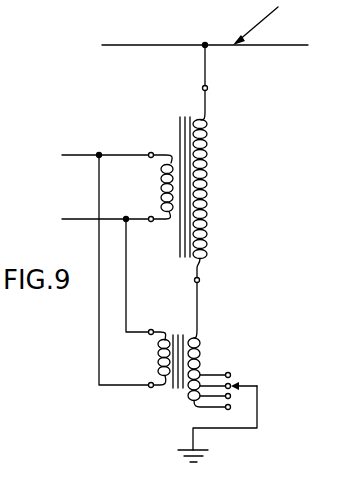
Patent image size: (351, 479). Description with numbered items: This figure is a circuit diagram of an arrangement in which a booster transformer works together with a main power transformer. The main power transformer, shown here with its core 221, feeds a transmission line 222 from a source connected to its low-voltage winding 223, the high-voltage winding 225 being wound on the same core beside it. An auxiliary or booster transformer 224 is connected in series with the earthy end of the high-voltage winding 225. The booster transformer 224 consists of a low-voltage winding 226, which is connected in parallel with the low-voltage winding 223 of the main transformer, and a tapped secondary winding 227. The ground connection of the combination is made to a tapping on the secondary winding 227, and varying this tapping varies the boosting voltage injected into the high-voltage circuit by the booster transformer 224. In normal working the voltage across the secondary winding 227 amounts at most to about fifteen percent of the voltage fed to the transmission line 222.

The transmission line 222 is at (263, 46).
The transformer core 221 is at (212, 179).
The high-voltage winding 225 is at (206, 233).
The low-voltage winding 223 is at (161, 188).
The auxiliary or booster transformer 224 is at (211, 332).
The low-voltage winding 226 is at (162, 376).
The tapped secondary winding 227 is at (204, 356).